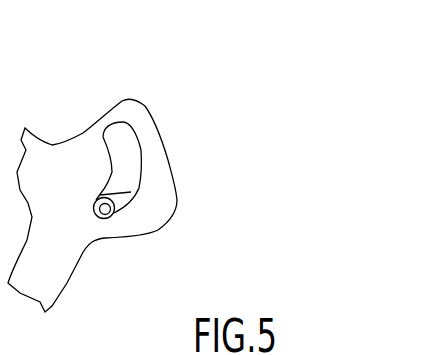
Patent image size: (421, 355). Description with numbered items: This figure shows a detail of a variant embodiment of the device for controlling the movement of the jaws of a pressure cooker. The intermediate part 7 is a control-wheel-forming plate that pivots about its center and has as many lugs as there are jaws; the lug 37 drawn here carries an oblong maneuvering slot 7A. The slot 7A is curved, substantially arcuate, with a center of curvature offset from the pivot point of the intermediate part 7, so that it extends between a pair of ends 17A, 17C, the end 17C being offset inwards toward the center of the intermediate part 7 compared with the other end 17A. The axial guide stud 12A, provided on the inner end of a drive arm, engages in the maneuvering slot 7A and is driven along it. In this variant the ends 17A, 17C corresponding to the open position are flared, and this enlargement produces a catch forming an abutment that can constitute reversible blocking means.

The intermediate part 7 is at (160, 211).
The oblong maneuvering slot 7A is at (144, 175).
The end of maneuvering slot 17A is at (104, 133).
The end of maneuvering slot 17C is at (100, 219).
The axial guide stud 12A is at (113, 213).
The lug 37 is at (152, 103).